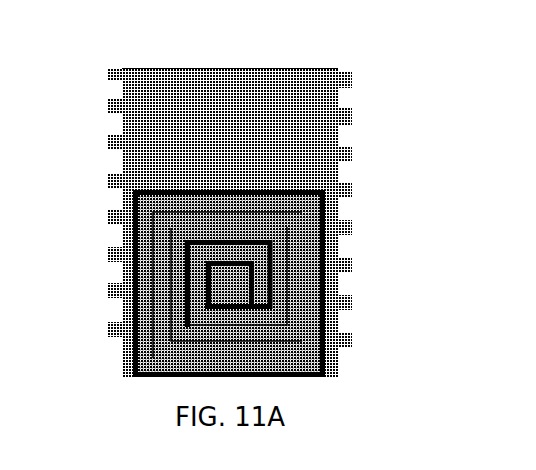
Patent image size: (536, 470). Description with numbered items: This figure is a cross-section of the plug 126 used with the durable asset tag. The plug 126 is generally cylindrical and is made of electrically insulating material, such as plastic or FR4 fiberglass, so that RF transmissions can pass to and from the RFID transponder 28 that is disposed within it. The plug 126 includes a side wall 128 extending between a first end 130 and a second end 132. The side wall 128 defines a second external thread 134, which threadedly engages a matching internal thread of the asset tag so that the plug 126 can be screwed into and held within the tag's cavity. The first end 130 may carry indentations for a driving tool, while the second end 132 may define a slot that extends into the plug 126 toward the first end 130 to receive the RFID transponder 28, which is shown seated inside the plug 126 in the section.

The RFID transponder 28 is at (300, 238).
The plug 126 is at (212, 68).
The side wall 128 is at (121, 123).
The first end 130 is at (250, 67).
The second end 132 is at (325, 377).
The second external thread 134 is at (349, 119).